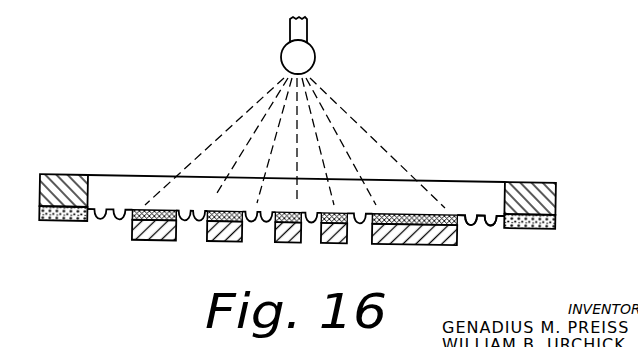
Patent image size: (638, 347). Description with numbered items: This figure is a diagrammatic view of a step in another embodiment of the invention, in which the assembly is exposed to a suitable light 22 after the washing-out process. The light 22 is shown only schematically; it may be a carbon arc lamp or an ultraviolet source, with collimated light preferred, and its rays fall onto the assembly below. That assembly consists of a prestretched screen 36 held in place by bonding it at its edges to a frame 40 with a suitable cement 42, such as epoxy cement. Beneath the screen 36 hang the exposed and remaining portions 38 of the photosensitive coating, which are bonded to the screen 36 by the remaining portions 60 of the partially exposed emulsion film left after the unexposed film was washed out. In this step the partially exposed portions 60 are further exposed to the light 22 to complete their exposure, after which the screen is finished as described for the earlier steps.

The light 22 is at (291, 46).
The prestretched screen 36 is at (486, 220).
The exposed and remaining portions of the photosensitive coating 38 is at (228, 239).
The frame 40 is at (556, 192).
The cement 42 is at (64, 222).
The remaining portions 60 is at (226, 209).